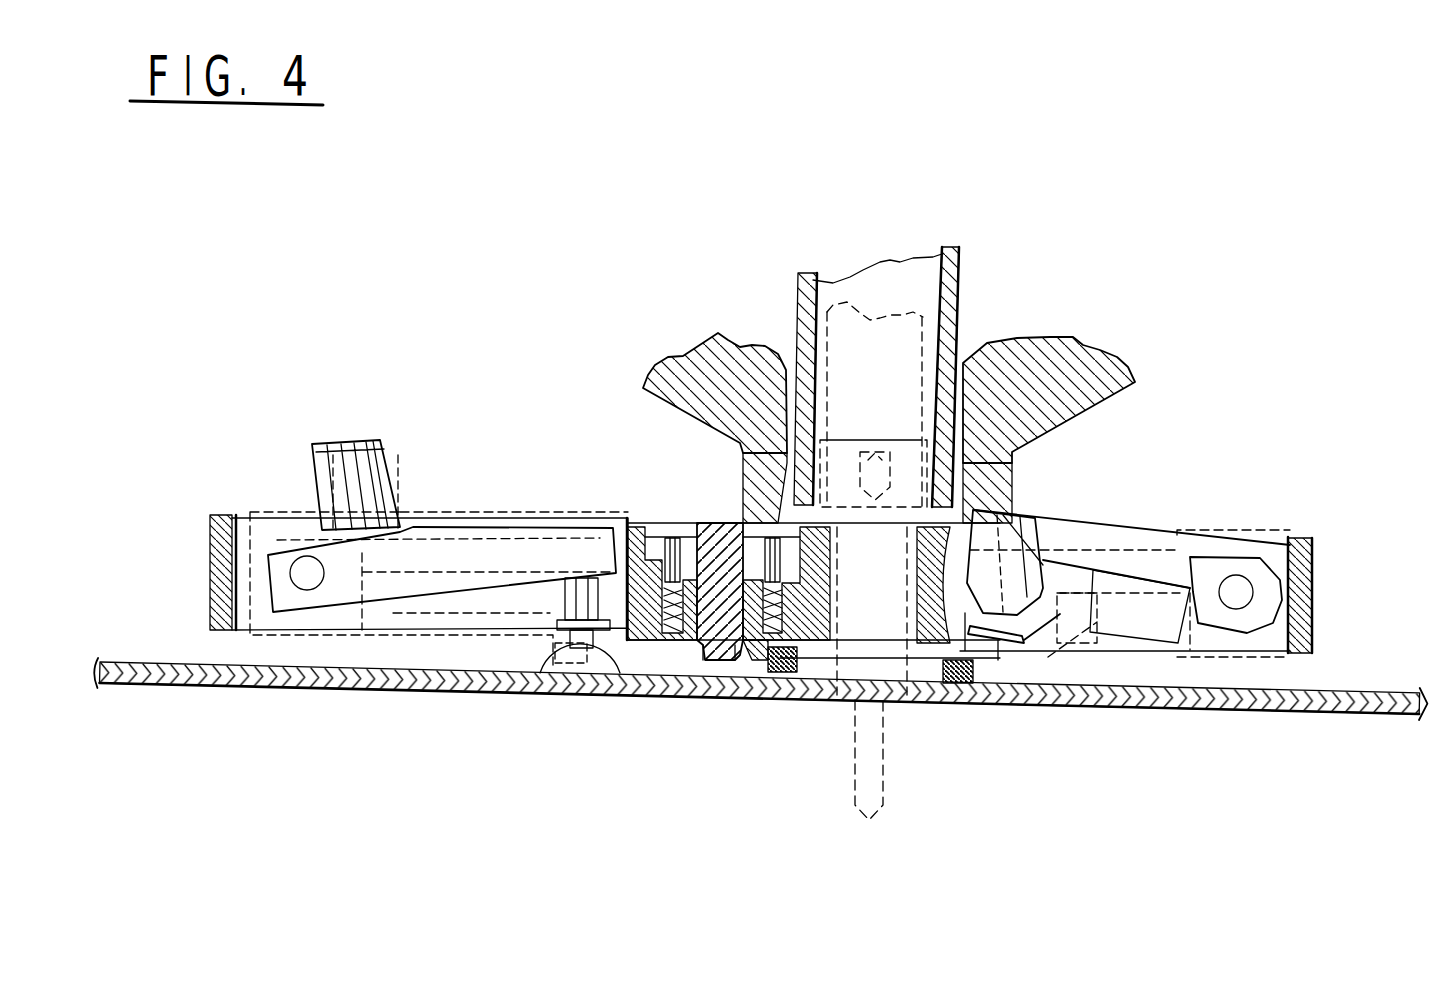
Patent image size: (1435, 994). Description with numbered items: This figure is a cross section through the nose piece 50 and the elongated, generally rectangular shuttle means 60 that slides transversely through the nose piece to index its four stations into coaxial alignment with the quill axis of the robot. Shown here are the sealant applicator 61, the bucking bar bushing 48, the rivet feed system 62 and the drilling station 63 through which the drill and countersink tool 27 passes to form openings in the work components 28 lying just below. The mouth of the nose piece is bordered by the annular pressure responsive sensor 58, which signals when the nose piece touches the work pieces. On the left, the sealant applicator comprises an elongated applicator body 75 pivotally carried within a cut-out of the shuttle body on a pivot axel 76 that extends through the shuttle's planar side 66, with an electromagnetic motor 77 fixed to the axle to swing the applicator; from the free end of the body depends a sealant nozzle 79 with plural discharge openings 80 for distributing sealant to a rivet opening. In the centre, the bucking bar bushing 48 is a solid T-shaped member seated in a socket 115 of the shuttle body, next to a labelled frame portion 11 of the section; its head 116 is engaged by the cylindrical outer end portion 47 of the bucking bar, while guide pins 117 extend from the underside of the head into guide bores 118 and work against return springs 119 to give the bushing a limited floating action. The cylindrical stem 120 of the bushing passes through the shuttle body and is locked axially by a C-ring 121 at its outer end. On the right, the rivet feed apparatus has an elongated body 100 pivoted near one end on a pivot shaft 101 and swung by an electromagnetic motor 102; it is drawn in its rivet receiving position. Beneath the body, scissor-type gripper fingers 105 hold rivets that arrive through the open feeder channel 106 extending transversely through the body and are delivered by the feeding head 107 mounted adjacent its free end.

The frame 11 is at (633, 514).
The drill and countersink tool 27 is at (840, 382).
The work components 28 is at (1217, 707).
The cylindrical outer end portion 47 is at (968, 275).
The bucking bar bushing 48 is at (700, 522).
The nose piece 50 is at (1096, 412).
The pressure responsive sensor 58 is at (757, 697).
The shuttle means 60 is at (1312, 562).
The sealant applicator 61 is at (401, 533).
The rivet feed system 62 is at (1121, 533).
The drilling station 63 is at (824, 650).
The planar side 66 is at (385, 632).
The applicator body 75 is at (413, 587).
The pivot axel 76 is at (310, 558).
The electromagnetic motor 77 is at (262, 532).
The sealant nozzle 79 is at (537, 675).
The discharge openings 80 is at (620, 672).
The elongated body 100 is at (1190, 556).
The pivot shaft 101 is at (1243, 594).
The electromagnetic motor 102 is at (1282, 542).
The gripper fingers 105 is at (1015, 660).
The feeder channel 106 is at (1030, 527).
The feeding head 107 is at (1030, 577).
The socket 115 is at (643, 523).
The head 116 is at (655, 521).
The guide pins 117 is at (682, 522).
The guide bores 118 is at (667, 643).
The return springs 119 is at (688, 642).
The cylindrical stem 120 is at (711, 693).
The C-ring 121 is at (697, 642).